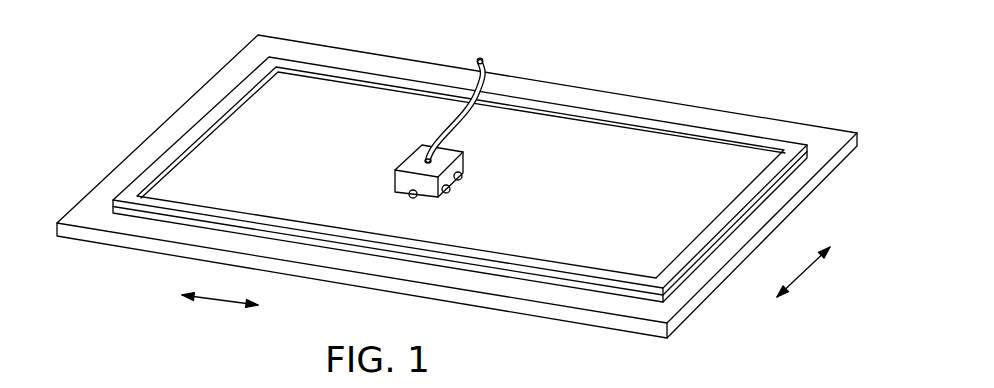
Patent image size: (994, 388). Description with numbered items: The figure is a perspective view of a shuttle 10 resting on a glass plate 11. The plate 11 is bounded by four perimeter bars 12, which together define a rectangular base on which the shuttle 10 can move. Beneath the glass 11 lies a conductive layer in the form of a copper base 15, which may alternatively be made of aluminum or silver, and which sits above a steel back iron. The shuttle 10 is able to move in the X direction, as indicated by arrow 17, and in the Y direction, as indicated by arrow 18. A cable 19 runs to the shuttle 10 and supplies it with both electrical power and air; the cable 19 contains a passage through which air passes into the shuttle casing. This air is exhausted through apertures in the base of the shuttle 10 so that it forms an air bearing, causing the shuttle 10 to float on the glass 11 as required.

The shuttle 10 is at (463, 160).
The glass plate 11 is at (632, 197).
The perimeter bars 12 is at (205, 122).
The copper base 15 is at (97, 192).
The arrow 17 is at (223, 300).
The arrow 18 is at (815, 262).
The cable 19 is at (483, 63).